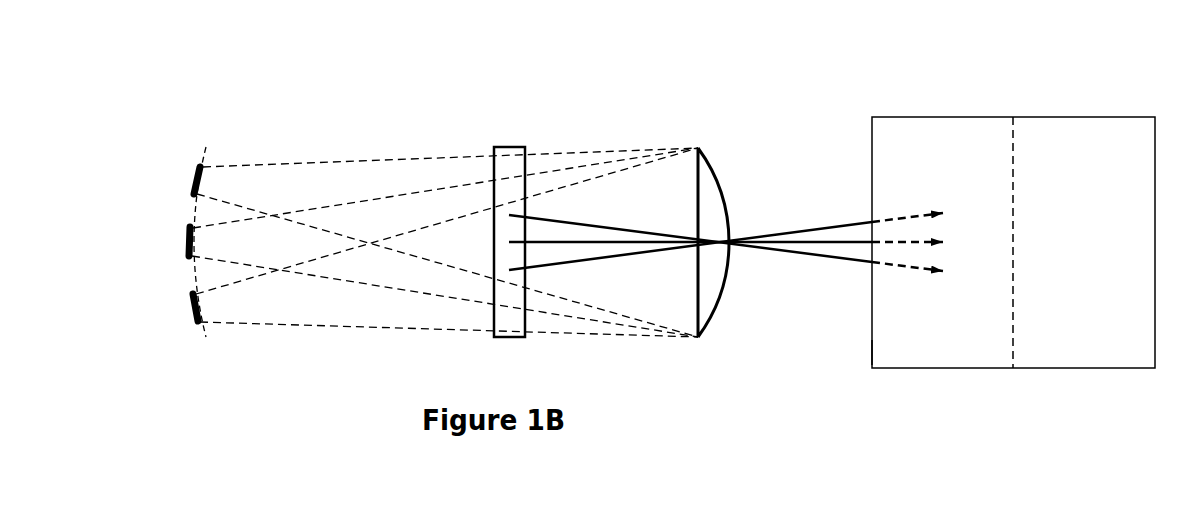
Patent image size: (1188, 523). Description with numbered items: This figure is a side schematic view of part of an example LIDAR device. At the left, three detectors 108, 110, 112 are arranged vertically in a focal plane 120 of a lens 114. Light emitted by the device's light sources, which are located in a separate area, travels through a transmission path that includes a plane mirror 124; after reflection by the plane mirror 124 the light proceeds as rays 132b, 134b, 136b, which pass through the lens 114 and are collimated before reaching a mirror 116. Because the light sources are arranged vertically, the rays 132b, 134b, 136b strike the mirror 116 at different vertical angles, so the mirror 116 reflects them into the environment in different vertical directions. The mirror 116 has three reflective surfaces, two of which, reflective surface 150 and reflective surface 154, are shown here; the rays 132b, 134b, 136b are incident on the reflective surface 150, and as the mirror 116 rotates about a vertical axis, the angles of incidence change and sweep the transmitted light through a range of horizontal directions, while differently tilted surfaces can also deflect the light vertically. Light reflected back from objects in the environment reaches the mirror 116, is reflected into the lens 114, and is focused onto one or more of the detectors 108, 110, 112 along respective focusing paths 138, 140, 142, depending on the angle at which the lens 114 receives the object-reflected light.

The detector 108 is at (190, 180).
The detector 110 is at (187, 245).
The detector 112 is at (193, 305).
The lens 114 is at (721, 178).
The mirror 116 is at (870, 352).
The focal plane 120 is at (205, 152).
The plane mirror 124 is at (508, 147).
The ray 132b is at (550, 217).
The ray 134b is at (612, 242).
The ray 136b is at (575, 263).
The focusing path 138 is at (283, 167).
The focusing path 140 is at (332, 208).
The focusing path 142 is at (240, 285).
The reflective surface 150 is at (919, 117).
The reflective surface 154 is at (1076, 117).